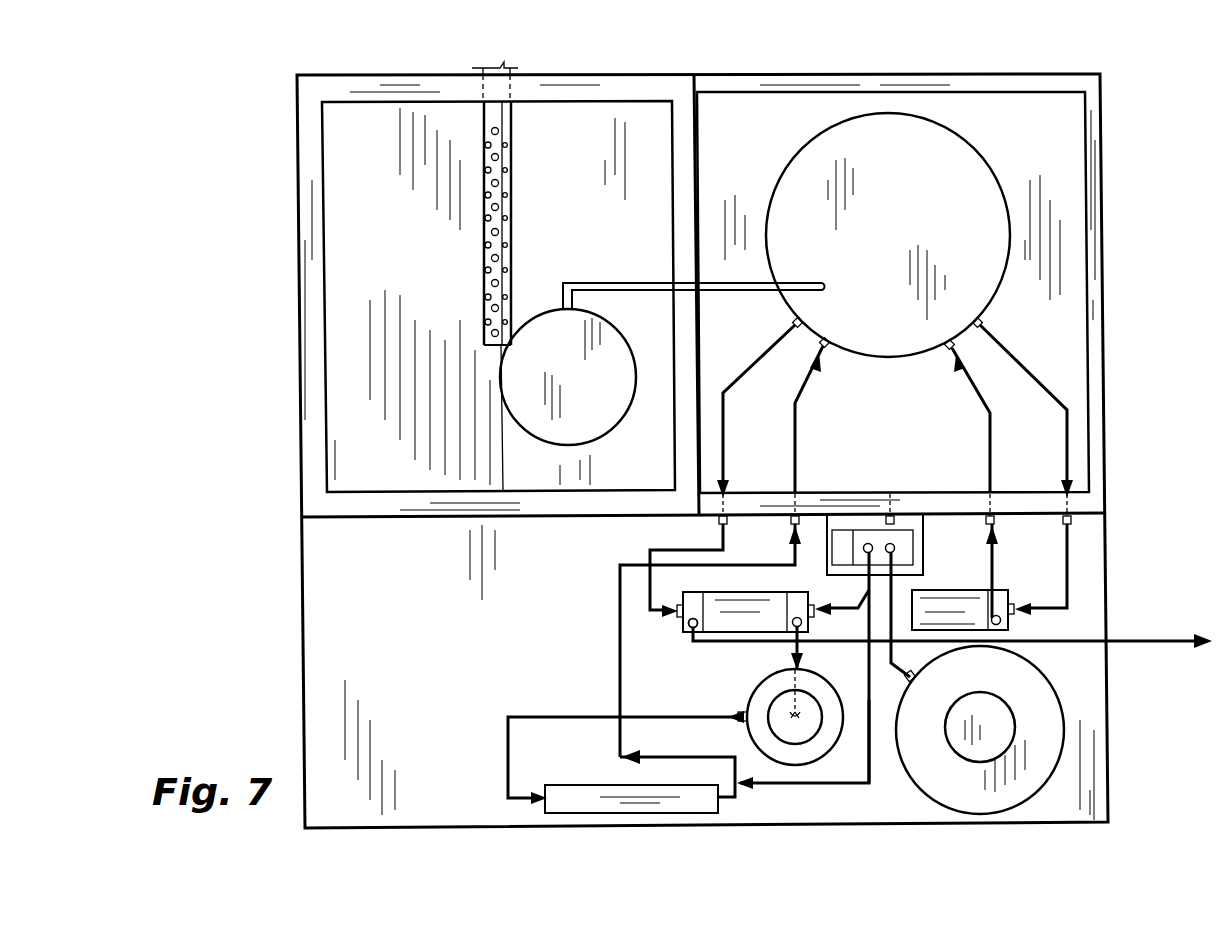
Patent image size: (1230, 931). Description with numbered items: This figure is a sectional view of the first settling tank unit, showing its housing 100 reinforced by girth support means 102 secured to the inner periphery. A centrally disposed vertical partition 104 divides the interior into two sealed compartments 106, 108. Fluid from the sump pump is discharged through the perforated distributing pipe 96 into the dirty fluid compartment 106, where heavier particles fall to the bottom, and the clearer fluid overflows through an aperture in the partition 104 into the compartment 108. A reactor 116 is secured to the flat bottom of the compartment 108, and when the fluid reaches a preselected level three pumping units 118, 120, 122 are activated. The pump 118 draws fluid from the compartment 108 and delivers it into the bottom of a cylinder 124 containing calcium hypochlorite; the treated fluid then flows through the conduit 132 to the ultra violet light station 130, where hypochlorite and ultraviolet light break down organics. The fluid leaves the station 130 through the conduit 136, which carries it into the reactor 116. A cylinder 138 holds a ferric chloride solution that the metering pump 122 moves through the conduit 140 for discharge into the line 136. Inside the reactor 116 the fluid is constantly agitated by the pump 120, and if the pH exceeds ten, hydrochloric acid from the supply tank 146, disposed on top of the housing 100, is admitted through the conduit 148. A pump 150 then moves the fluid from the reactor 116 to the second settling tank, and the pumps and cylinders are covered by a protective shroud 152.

The distributing pipe means 96 is at (507, 232).
The housing 100 is at (1103, 222).
The girth support means 102 is at (1095, 308).
The vertical partition 104 is at (698, 166).
The compartment 106 is at (415, 283).
The compartment 108 is at (1054, 172).
The reactor 116 is at (945, 138).
The pump 118 is at (803, 632).
The pump 120 is at (958, 595).
The pump 122 is at (884, 540).
The cylinder or housing 124 is at (758, 700).
The ultra violet light station 130 is at (578, 785).
The conduit means 132 is at (560, 717).
The hose or conduit 136 is at (618, 592).
The housing or cylinder 138 is at (1043, 684).
The conduit or hose 140 is at (835, 783).
The hydrochloric acid supply tank 146 is at (588, 433).
The conduit or hose 148 is at (620, 283).
The pump 150 is at (686, 618).
The shroud or housing 152 is at (1108, 597).